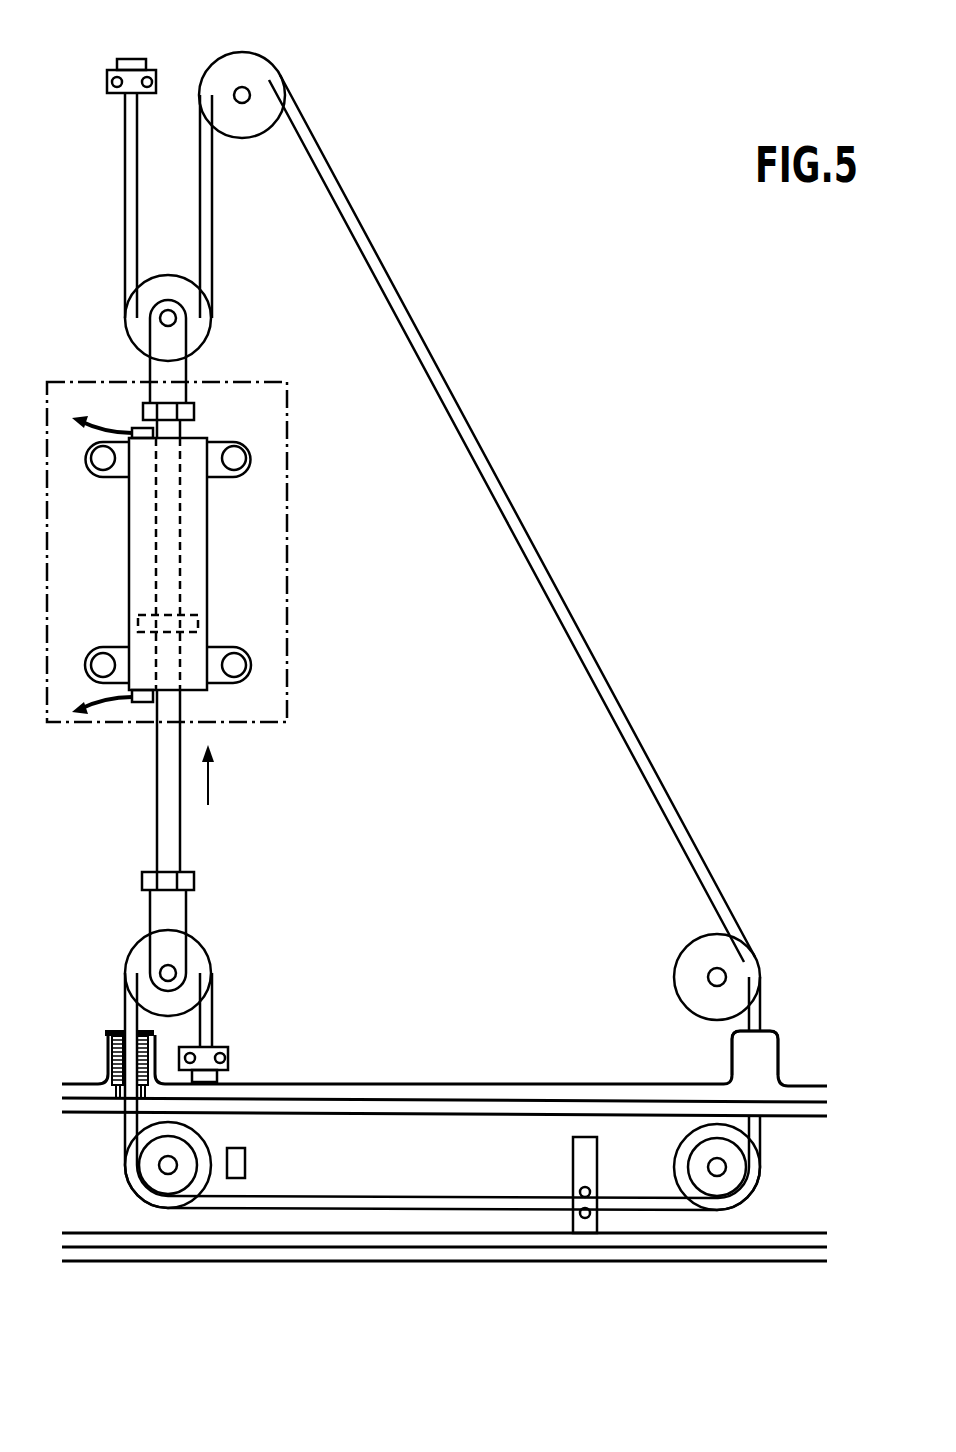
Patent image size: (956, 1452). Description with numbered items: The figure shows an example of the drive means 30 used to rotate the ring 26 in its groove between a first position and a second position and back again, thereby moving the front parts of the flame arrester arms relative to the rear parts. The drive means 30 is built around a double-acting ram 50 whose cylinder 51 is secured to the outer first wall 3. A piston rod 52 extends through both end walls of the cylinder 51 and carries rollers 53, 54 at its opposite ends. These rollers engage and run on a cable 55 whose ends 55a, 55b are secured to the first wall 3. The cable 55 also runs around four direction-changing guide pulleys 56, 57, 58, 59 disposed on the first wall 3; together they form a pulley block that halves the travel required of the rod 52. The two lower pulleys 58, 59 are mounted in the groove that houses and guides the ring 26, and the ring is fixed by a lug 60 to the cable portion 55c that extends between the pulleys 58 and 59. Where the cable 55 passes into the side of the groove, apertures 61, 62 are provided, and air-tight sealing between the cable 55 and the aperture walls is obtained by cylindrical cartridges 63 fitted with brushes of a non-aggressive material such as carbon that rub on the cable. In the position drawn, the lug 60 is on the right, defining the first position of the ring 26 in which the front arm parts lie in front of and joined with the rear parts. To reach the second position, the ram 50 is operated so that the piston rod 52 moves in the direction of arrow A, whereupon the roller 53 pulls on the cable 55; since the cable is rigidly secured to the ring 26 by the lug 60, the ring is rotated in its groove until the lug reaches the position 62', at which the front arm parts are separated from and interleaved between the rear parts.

The outer first wall 3 is at (280, 582).
The ring 26 is at (210, 1225).
The drive means 30 is at (640, 550).
The double-acting ram 50 is at (115, 552).
The cylinder 51 is at (143, 578).
The piston rod 52 is at (165, 800).
The roller 53 is at (202, 970).
The roller 54 is at (200, 328).
The cable 55 is at (408, 315).
The cable end 55a is at (222, 1047).
The cable end 55b is at (108, 93).
The cable run 55c is at (447, 1199).
The direction-changing guide pulley 56 is at (258, 72).
The direction-changing guide pulley 57 is at (687, 990).
The direction-changing guide pulley 58 is at (733, 1180).
The direction-changing guide pulley 59 is at (147, 1173).
The lug 60 is at (583, 1165).
The aperture 61 is at (95, 1056).
The aperture 62 is at (798, 1023).
The position 62' is at (272, 1150).
The cylindrical cartridge 63 is at (117, 1088).